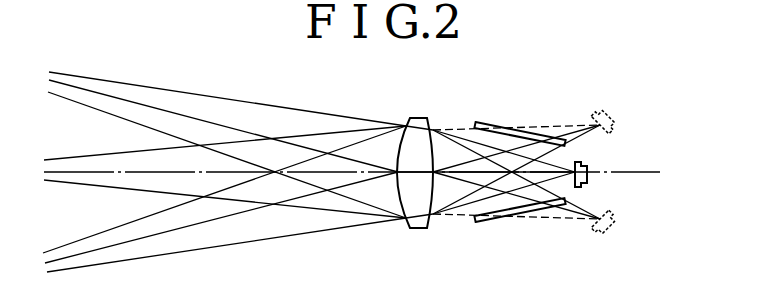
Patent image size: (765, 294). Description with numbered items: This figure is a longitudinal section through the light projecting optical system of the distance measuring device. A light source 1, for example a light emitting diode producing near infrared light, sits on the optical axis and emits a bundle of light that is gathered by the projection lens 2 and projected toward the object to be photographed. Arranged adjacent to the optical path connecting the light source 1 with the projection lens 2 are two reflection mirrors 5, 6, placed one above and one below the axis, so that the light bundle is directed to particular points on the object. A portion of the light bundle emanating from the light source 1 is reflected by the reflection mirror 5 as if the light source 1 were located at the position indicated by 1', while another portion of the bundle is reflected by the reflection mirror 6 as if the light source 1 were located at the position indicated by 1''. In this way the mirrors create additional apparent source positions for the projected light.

The light source 1 is at (605, 167).
The position of the light source 1' is at (611, 101).
The position of the light source 1'' is at (621, 241).
The projection lens 2 is at (419, 118).
The reflection mirror 5 is at (494, 122).
The reflection mirror 6 is at (489, 226).